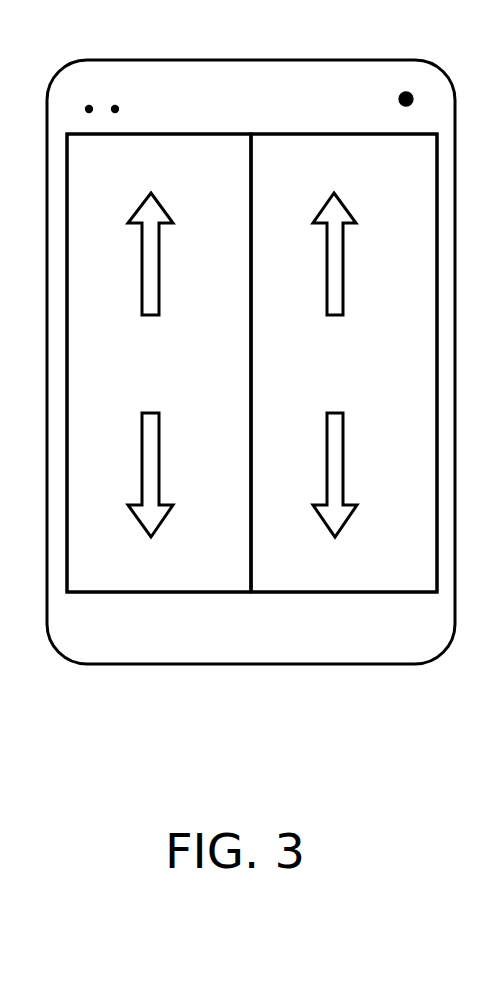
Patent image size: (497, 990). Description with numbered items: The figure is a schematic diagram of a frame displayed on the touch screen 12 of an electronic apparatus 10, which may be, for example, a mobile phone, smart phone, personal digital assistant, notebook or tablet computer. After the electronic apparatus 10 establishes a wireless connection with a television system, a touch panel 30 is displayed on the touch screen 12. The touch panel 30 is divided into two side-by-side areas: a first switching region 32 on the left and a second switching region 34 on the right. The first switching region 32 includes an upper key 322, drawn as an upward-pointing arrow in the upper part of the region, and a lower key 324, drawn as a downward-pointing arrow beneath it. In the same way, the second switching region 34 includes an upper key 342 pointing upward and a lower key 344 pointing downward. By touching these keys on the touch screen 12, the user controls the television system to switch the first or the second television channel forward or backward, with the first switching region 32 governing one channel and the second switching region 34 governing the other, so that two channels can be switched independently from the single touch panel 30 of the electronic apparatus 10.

The electronic apparatus 10 is at (352, 60).
The touch screen 12 is at (200, 133).
The touch panel 30 is at (402, 727).
The first switching region 32 is at (199, 574).
The second switching region 34 is at (386, 574).
The upper key 322 is at (159, 268).
The lower key 324 is at (159, 460).
The upper key 342 is at (343, 268).
The lower key 344 is at (343, 460).